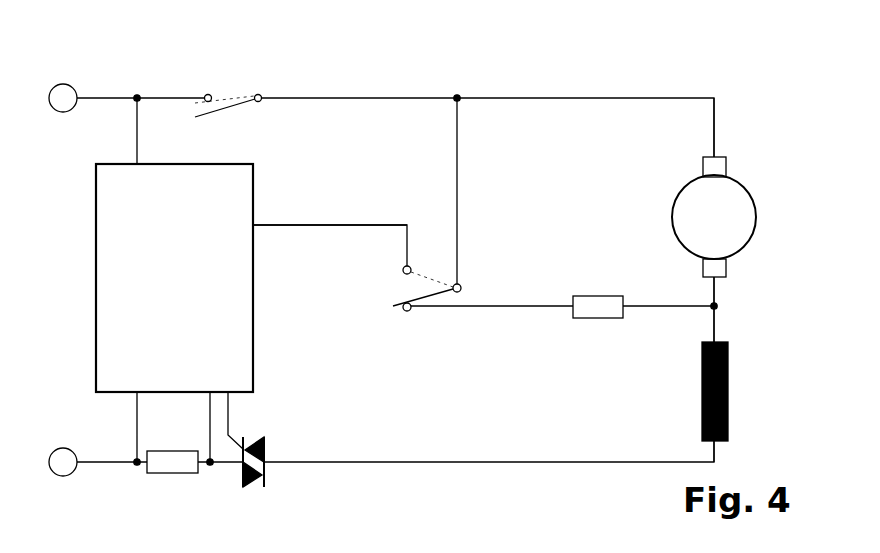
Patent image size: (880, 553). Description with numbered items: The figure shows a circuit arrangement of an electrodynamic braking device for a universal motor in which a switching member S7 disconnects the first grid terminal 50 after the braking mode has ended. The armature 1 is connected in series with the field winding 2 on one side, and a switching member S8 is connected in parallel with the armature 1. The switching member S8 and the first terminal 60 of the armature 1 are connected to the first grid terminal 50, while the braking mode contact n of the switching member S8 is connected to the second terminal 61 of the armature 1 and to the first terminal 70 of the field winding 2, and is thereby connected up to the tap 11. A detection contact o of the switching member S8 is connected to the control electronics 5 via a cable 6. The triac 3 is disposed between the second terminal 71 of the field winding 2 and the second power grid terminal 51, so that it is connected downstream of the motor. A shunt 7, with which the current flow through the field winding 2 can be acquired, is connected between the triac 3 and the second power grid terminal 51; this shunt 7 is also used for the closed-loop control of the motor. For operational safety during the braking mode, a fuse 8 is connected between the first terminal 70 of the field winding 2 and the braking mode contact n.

The armature 1 is at (672, 218).
The field winding 2 is at (701, 393).
The triac 3 is at (255, 488).
The control electronics 5 is at (95, 278).
The cable 6 is at (326, 226).
The shunt 7 is at (172, 474).
The fuse 8 is at (598, 319).
The tap 11 is at (712, 304).
The first grid terminal 50 is at (63, 84).
The second power grid terminal 51 is at (63, 448).
The first terminal of the armature 60 is at (715, 128).
The second terminal of the armature 61 is at (715, 290).
The first terminal of the field winding 70 is at (715, 325).
The second terminal of the field winding 71 is at (715, 455).
The switching member S7 is at (258, 94).
The switching member S8 is at (462, 287).
The detection contact o is at (412, 265).
The braking mode contact n is at (407, 312).